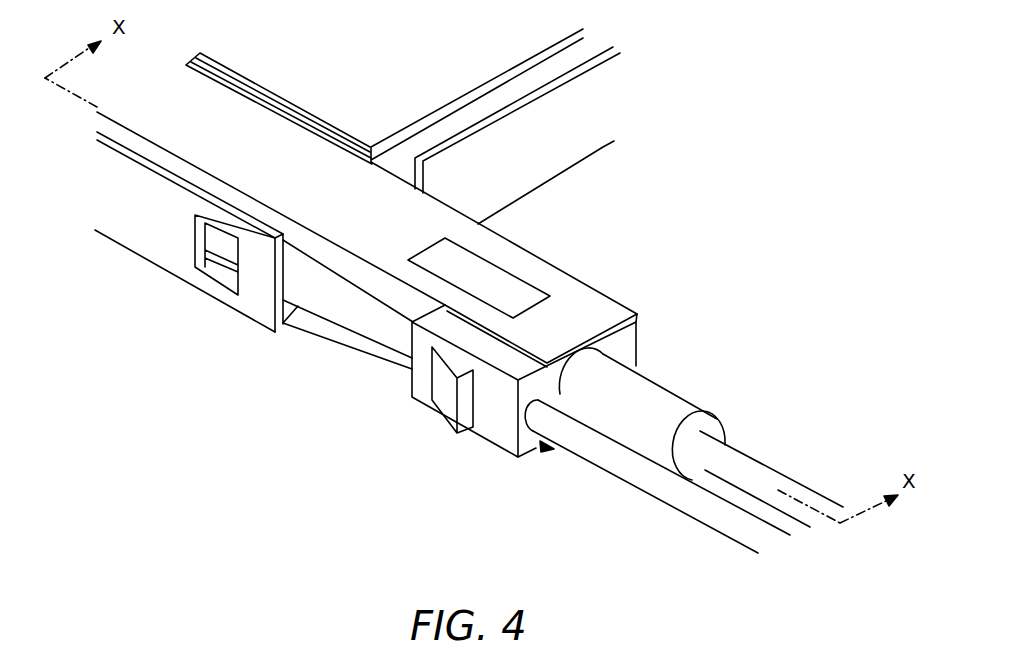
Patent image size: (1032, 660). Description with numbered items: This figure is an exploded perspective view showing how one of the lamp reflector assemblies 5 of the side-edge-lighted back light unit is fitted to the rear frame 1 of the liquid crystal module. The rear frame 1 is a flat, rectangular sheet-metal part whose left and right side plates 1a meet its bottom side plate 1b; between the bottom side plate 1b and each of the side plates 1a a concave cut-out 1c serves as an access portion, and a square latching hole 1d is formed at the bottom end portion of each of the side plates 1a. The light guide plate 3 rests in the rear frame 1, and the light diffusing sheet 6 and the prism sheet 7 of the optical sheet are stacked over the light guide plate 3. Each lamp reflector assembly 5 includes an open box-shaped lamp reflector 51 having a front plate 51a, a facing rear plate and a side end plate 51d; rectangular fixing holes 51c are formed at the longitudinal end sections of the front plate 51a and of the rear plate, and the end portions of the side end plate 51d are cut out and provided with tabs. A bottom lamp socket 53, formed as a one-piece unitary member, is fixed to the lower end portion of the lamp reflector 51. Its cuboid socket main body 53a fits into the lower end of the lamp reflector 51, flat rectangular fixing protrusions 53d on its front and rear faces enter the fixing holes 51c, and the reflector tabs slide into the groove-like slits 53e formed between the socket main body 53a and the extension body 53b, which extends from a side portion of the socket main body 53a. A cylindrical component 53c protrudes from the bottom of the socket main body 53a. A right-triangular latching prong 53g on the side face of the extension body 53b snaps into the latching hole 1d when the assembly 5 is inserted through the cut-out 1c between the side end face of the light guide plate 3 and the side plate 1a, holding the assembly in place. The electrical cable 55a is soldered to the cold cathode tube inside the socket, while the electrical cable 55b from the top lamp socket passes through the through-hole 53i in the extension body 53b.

The rear frame 1 is at (236, 325).
The left and right side plates 1a is at (145, 238).
The bottom side plate 1b is at (603, 147).
The concave cut-outs 1c is at (297, 325).
The latching holes 1d is at (233, 270).
The light guide plate 3 is at (450, 128).
The lamp reflector assemblies 5 is at (573, 364).
The light diffusing sheet 6 is at (515, 82).
The prism sheet 7 is at (557, 57).
The lamp reflector 51 is at (298, 140).
The front plate 51a is at (287, 108).
The fixing holes 51c is at (485, 260).
The side end plate 51d is at (388, 298).
The bottom lamp socket 53 is at (622, 333).
The socket main body 53a is at (583, 336).
The extension body 53b is at (500, 433).
The cylindrical component 53c is at (683, 400).
The fixing protrusions 53d is at (515, 292).
The groove-like slits 53e is at (470, 316).
The latching prong 53g is at (443, 402).
The through-hole 53i is at (538, 436).
The electrical cable 55a is at (760, 470).
The electrical cable 55b is at (340, 308).